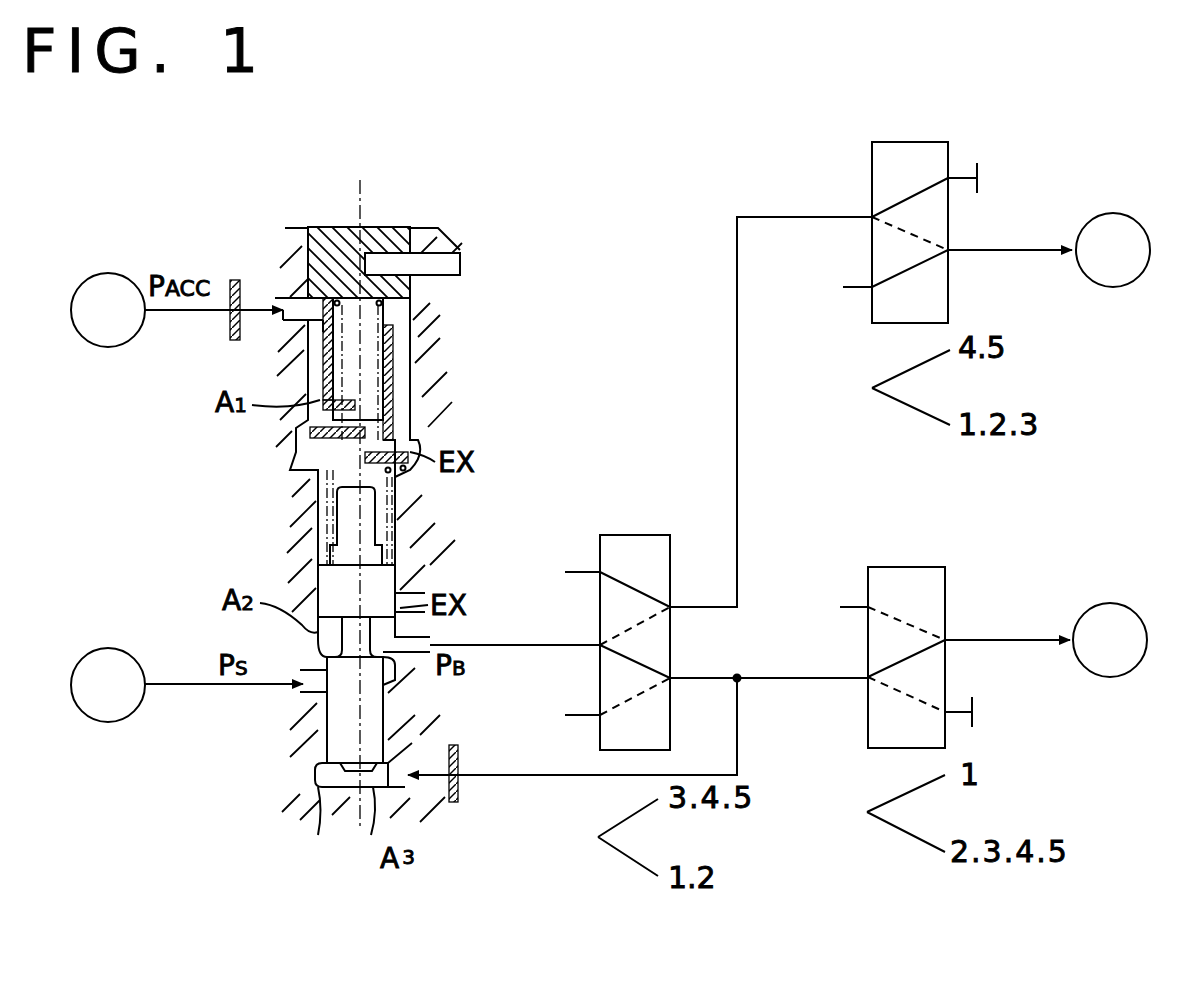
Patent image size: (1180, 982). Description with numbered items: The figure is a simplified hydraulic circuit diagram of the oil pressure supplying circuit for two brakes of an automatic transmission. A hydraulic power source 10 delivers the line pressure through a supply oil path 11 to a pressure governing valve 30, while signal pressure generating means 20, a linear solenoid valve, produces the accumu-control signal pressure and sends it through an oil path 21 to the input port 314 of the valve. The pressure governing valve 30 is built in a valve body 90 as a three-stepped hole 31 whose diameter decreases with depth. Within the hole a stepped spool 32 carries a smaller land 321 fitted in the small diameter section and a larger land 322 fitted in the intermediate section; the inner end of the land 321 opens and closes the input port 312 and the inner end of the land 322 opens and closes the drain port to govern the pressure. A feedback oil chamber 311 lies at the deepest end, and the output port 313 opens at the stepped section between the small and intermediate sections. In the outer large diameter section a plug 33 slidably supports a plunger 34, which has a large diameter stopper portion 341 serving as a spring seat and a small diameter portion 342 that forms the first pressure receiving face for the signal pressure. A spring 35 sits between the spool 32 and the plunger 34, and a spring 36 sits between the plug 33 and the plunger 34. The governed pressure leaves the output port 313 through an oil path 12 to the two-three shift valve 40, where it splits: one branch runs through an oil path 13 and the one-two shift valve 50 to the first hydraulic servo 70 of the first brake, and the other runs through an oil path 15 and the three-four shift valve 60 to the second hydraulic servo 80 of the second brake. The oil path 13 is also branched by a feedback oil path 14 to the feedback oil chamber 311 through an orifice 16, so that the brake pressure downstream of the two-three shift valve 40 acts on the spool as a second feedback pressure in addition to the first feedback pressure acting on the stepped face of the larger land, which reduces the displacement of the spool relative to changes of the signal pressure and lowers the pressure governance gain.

The hydraulic power source 10 is at (92, 655).
The supply oil path 11 is at (160, 688).
The oil path 12 is at (530, 645).
The oil path 13 is at (790, 678).
The feedback line to valve bottom chamber 14 is at (525, 778).
The oil path 15 is at (740, 420).
The orifice 16 is at (458, 772).
The signal pressure generating means 20 is at (92, 280).
The oil path 21 is at (150, 312).
The pressure governing valve 30 is at (430, 212).
The three-stepped hole 31 is at (410, 412).
The stepped spool 32 is at (365, 718).
The plug 33 is at (378, 228).
The plunger 34 is at (395, 356).
The spring 35 is at (318, 452).
The spring 36 is at (410, 312).
The 2-3 shift valve 40 is at (670, 553).
The 1-2 shift valve 50 is at (945, 586).
The 3-4 shift valve 60 is at (872, 162).
The first hydraulic servo 70 is at (1110, 605).
The second hydraulic servo 80 is at (1116, 215).
The valve body 90 is at (302, 240).
The feedback oil chamber 311 is at (315, 831).
The input port 312 is at (318, 692).
The output port 313 is at (420, 640).
The input port 314 is at (295, 300).
The land 321 is at (318, 762).
The land 322 is at (380, 578).
The stopper portion 341 is at (410, 458).
The small diameter portion 342 is at (323, 332).